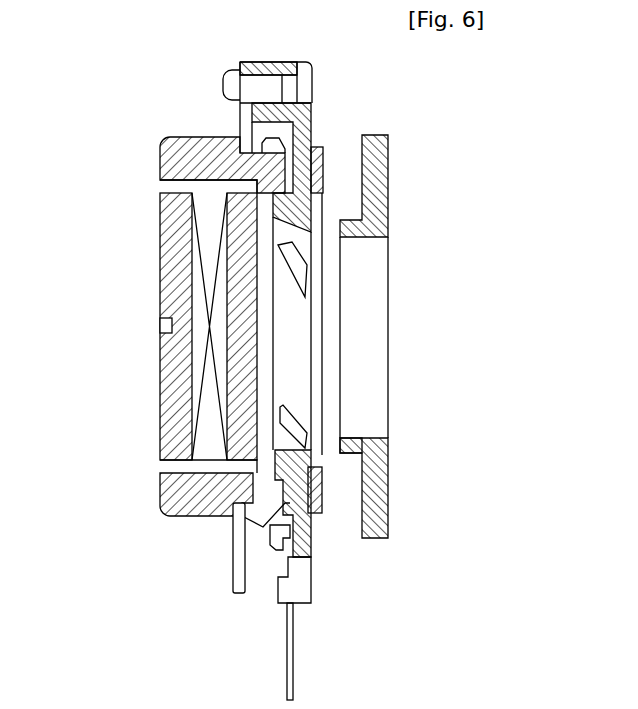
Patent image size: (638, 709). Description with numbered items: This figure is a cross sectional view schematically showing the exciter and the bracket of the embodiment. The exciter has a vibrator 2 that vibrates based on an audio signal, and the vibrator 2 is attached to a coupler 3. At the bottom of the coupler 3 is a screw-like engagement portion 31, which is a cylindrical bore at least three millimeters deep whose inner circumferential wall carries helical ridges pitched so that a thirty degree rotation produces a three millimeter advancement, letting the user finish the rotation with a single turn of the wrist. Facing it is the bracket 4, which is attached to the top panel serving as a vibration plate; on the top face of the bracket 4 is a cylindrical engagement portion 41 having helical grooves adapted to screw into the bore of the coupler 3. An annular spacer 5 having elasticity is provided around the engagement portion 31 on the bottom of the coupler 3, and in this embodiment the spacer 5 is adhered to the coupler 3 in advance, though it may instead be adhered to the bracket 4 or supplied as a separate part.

The vibrator 2 is at (163, 273).
The coupler 3 is at (310, 120).
The engagement portion 31 is at (302, 337).
The annular spacer 5 is at (320, 168).
The bracket 4 is at (370, 513).
The cylindrical engagement portion 41 is at (345, 453).